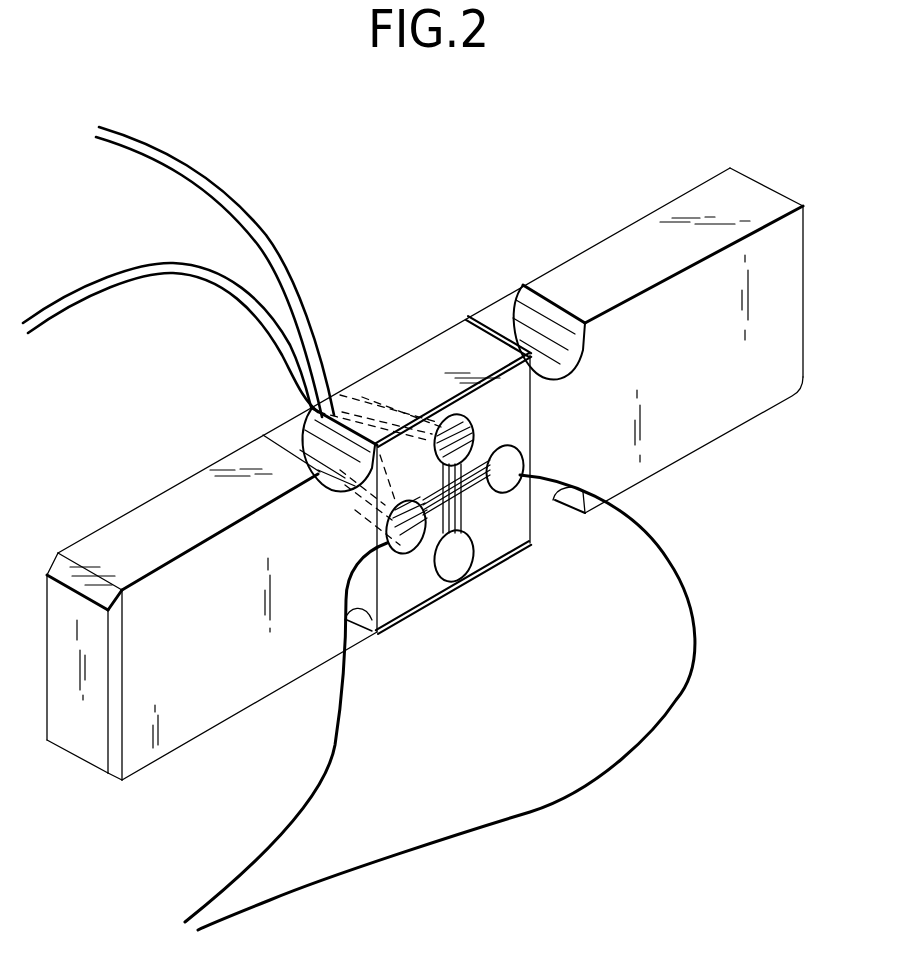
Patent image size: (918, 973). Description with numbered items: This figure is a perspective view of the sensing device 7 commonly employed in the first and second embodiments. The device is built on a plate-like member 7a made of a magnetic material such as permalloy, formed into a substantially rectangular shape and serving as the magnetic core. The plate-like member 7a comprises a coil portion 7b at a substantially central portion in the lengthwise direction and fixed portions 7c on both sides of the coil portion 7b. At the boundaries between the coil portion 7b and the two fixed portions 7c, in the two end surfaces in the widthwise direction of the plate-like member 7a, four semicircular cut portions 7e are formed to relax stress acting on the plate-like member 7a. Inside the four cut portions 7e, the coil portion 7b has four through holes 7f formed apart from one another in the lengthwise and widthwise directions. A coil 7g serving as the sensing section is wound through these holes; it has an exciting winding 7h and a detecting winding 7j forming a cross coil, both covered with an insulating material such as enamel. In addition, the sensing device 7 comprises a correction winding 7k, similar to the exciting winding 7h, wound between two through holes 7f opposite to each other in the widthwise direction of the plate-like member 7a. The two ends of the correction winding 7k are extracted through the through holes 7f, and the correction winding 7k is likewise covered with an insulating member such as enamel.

The sensing device 7 is at (830, 310).
The plate-like member 7a is at (808, 250).
The coil portion 7b is at (431, 355).
The fixed portions 7c is at (157, 520).
The cut portions 7e is at (300, 437).
The through holes 7f is at (470, 430).
The coil 7g is at (514, 464).
The exciting winding 7h is at (467, 512).
The detecting winding 7j is at (480, 492).
The correction winding 7k is at (423, 416).